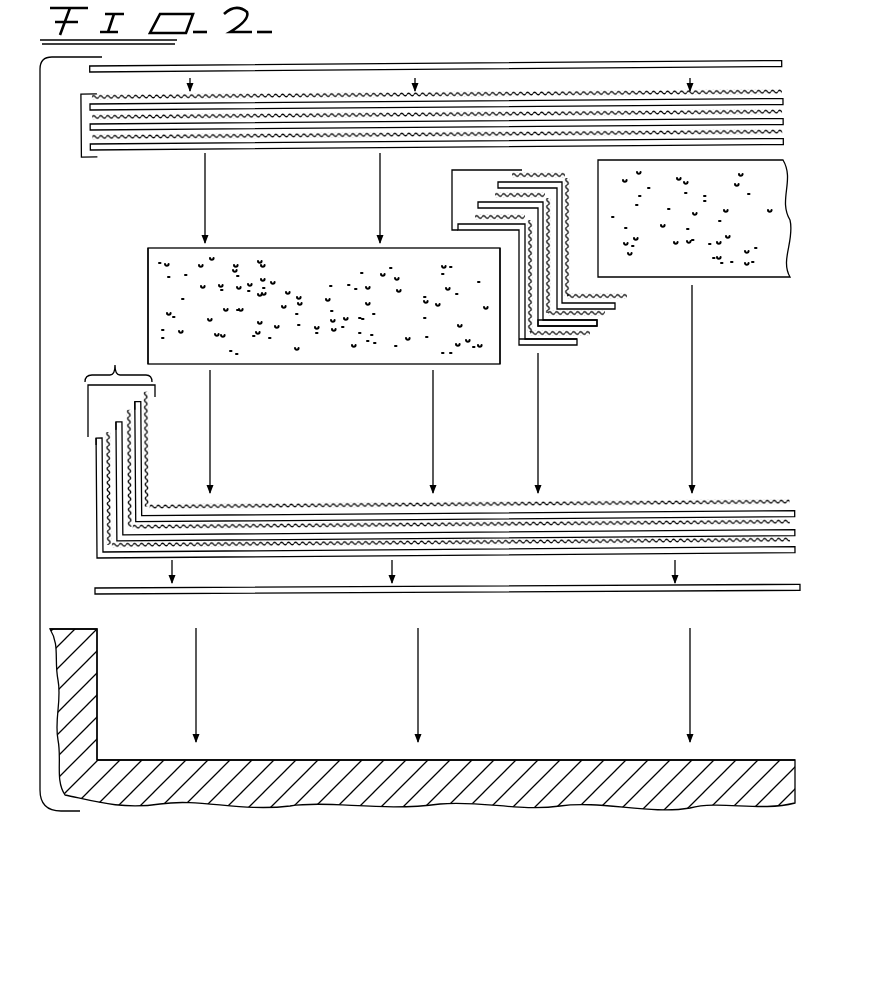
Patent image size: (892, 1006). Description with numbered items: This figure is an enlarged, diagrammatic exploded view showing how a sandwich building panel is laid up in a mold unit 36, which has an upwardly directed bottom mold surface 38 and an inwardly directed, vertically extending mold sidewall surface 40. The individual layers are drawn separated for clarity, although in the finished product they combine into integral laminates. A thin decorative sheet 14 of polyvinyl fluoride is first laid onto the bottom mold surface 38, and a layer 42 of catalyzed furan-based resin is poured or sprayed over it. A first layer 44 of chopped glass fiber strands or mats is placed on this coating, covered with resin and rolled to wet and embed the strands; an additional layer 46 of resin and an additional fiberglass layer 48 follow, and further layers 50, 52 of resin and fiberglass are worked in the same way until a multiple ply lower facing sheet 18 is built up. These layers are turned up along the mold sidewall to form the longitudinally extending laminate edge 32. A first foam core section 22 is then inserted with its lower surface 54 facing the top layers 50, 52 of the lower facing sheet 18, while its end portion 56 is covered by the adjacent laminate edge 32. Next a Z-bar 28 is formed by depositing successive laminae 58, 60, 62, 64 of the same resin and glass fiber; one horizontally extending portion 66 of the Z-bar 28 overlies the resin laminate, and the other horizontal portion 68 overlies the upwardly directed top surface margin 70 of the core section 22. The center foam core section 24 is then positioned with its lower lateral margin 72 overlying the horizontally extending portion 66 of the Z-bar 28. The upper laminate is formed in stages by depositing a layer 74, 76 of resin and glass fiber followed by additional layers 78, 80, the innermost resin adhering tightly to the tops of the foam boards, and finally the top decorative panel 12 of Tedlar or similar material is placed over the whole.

The top decorative panel 12 is at (320, 65).
The decorative sheet 14 is at (295, 595).
The lower facing sheet 18 is at (115, 350).
The first foam core section 22 is at (293, 353).
The center foam core section 24 is at (733, 262).
The Z-bar 28 is at (534, 279).
The laminate edge 32 is at (187, 430).
The mold unit 36 is at (422, 759).
The bottom mold surface 38 is at (485, 758).
The mold sidewall surface 40 is at (97, 695).
The layer of catalyzed furan based resin 42 is at (438, 555).
The first layer of chopped glass fiber strands or mats 44 is at (538, 543).
The additional layer of resin 46 is at (745, 538).
The additional fiberglass layer 48 is at (622, 524).
The layer of resin 50 is at (553, 512).
The layer of fiberglass 52 is at (592, 505).
The lower surface of core section 54 is at (455, 365).
The end portion of core section 56 is at (153, 298).
The lamina of Z-bar 58 is at (563, 347).
The lamina of Z-bar 60 is at (587, 337).
The lamina of Z-bar 62 is at (597, 327).
The lamina of Z-bar 64 is at (628, 305).
The horizontally extending portion of Z-bar 66 is at (608, 342).
The horizontal portion of Z-bar 68 is at (478, 158).
The top surface margin of core section 70 is at (478, 246).
The lower lateral margin of center core section 72 is at (607, 286).
The resin layer of upper laminate 74 is at (307, 150).
The glass fiber layer of upper laminate 76 is at (348, 137).
The additional resin layer of upper laminate 78 is at (247, 128).
The additional glass fiber layer of upper laminate 80 is at (275, 117).